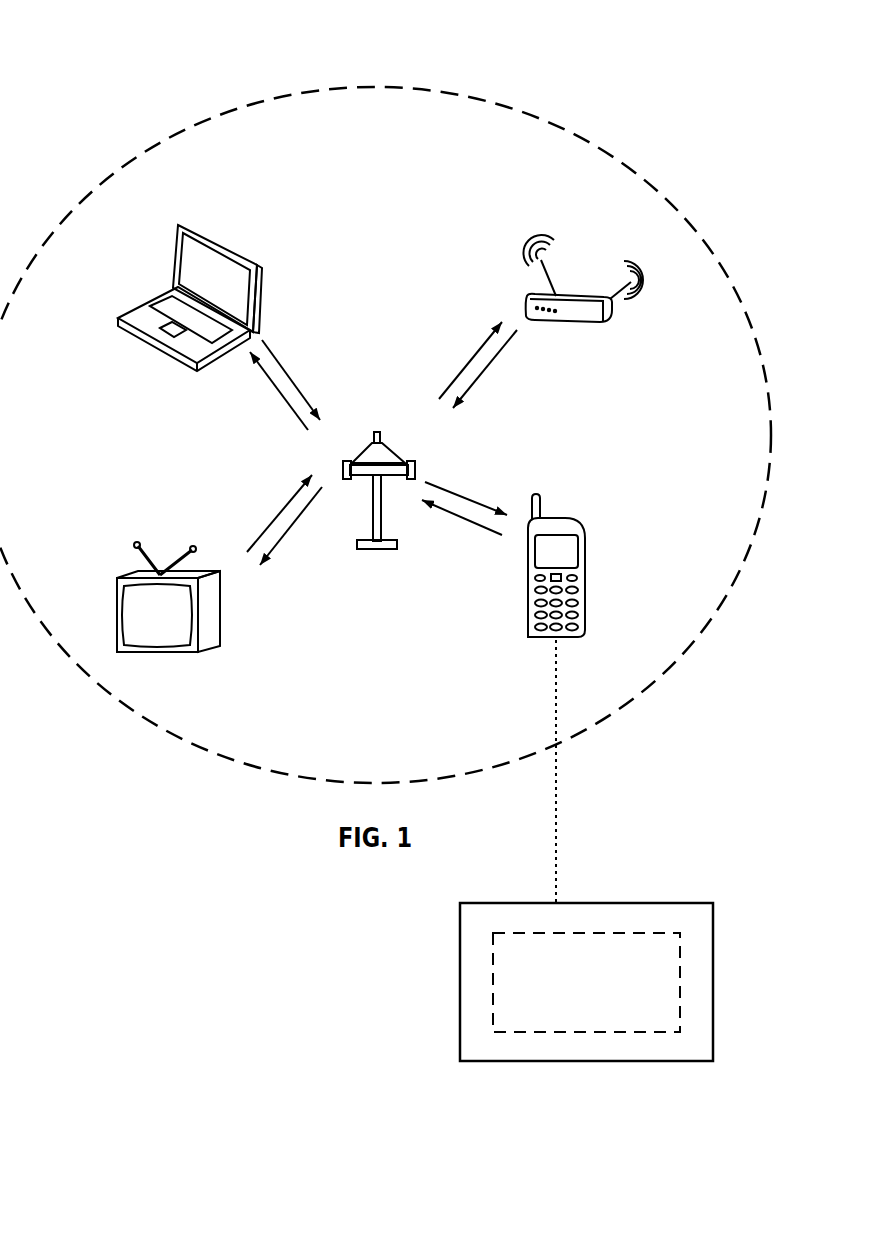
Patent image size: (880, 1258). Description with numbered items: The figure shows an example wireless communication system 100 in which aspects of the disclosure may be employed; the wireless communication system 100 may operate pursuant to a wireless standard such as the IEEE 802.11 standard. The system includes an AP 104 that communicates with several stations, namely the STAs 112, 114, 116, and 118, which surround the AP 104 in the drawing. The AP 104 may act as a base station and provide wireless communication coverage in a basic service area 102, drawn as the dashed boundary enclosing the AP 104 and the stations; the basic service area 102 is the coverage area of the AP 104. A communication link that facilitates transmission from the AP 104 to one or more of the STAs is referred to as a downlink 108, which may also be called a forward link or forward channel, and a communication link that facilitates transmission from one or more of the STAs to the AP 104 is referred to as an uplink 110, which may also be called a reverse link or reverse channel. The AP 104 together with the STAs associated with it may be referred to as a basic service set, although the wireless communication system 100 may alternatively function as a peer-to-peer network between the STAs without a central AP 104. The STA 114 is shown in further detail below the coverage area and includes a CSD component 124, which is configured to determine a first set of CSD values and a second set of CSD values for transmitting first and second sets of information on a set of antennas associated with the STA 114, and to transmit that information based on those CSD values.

The wireless communication system 100 is at (108, 46).
The basic service area 102 is at (396, 86).
The AP 104 is at (379, 432).
The downlink 108 is at (468, 499).
The uplink 110 is at (480, 528).
The STA 112 is at (565, 292).
The STA 114 is at (555, 518).
The STA 116 is at (195, 224).
The STA 118 is at (138, 578).
The CSD component 124 is at (680, 970).